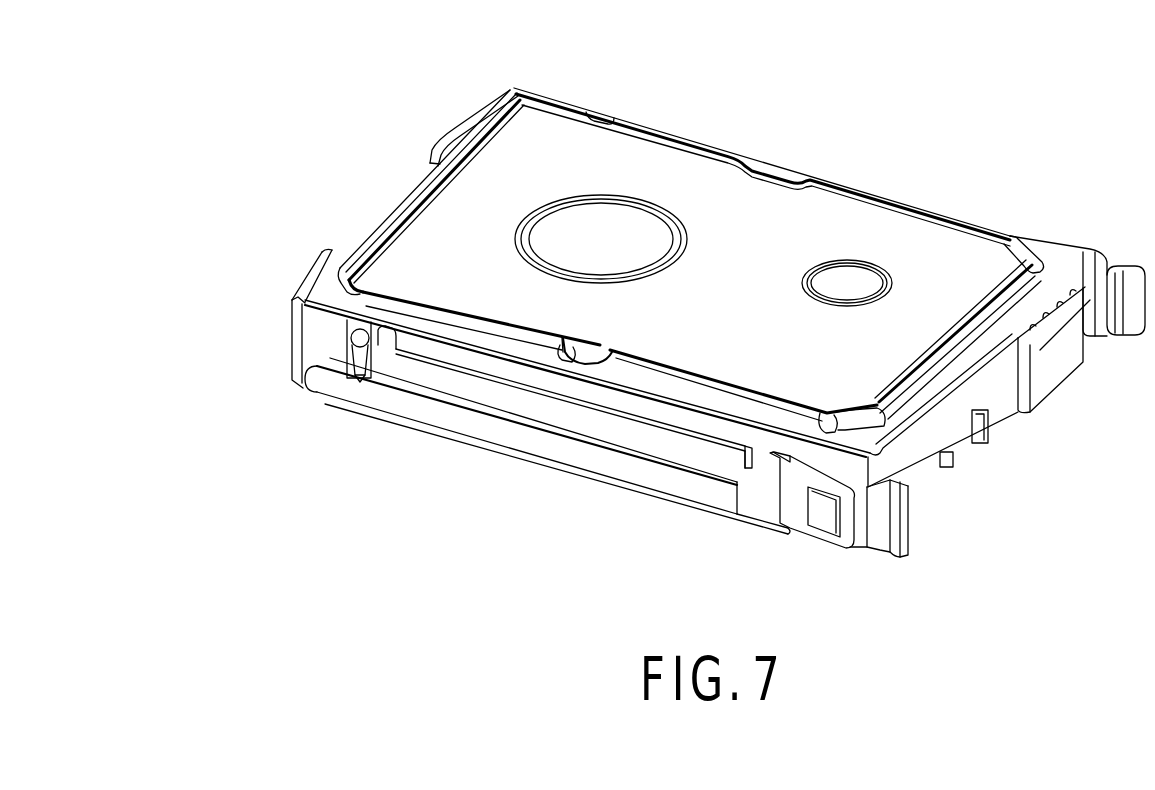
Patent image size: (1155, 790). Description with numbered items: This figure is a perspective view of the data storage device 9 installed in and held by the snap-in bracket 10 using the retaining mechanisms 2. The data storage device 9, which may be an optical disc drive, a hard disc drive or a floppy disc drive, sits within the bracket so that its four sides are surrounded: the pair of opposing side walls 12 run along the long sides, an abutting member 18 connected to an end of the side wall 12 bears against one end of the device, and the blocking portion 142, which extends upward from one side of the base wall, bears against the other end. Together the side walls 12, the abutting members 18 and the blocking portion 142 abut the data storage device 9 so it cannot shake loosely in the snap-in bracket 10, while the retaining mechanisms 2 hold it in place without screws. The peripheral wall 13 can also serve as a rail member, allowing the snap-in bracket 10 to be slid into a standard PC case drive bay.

The retaining mechanism 2 is at (337, 340).
The data storage device 9 is at (824, 220).
The snap-in bracket 10 is at (1093, 232).
The side wall 12 is at (475, 395).
The peripheral wall 13 is at (535, 442).
The abutting member 18 is at (467, 114).
The blocking portion 142 is at (1052, 362).